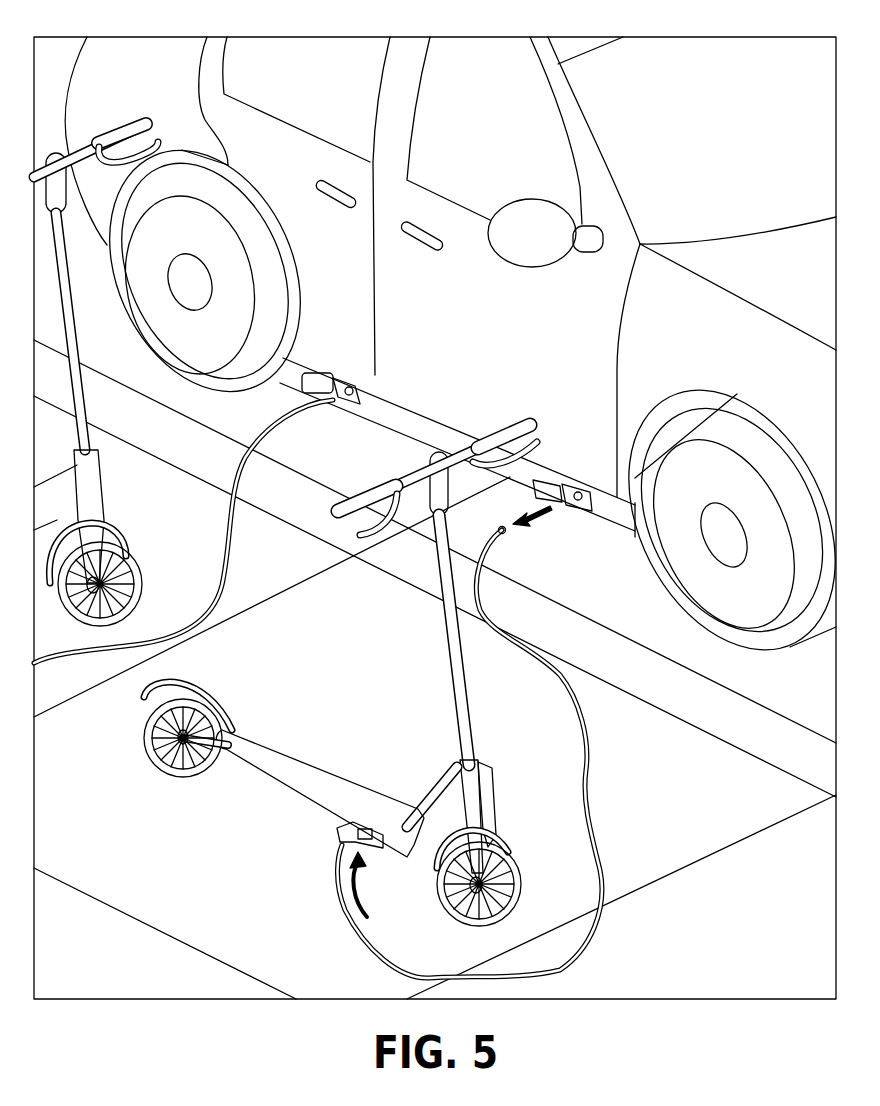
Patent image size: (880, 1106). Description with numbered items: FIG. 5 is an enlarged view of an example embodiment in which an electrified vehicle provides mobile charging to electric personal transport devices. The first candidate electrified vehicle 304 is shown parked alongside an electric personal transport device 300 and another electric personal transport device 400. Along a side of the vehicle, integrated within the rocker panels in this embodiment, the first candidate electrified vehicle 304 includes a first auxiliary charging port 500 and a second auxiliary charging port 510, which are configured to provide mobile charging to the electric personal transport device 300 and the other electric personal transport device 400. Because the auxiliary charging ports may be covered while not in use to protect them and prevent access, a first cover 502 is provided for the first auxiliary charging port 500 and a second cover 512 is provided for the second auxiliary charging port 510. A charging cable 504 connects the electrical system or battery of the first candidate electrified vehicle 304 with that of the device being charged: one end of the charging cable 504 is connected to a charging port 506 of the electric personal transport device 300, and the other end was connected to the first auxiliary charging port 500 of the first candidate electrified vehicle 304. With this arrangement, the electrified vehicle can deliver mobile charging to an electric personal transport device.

The electric personal transport device 300 is at (302, 768).
The first candidate electrified vehicle 304 is at (512, 351).
The another electric personal transport device 400 is at (114, 503).
The first auxiliary charging port 500 is at (575, 512).
The first cover 502 is at (548, 482).
The charging cable 504 is at (583, 810).
The charging port 506 is at (367, 820).
The second auxiliary charging port 510 is at (347, 404).
The second cover 512 is at (330, 372).